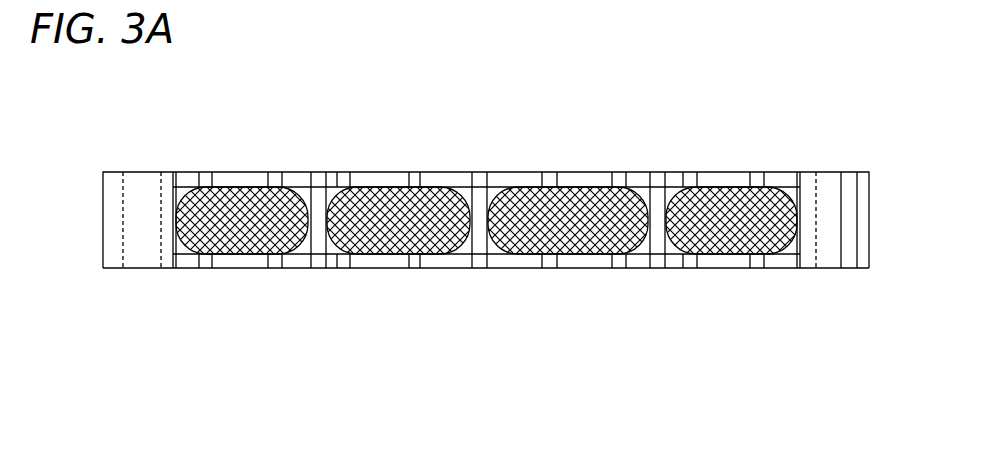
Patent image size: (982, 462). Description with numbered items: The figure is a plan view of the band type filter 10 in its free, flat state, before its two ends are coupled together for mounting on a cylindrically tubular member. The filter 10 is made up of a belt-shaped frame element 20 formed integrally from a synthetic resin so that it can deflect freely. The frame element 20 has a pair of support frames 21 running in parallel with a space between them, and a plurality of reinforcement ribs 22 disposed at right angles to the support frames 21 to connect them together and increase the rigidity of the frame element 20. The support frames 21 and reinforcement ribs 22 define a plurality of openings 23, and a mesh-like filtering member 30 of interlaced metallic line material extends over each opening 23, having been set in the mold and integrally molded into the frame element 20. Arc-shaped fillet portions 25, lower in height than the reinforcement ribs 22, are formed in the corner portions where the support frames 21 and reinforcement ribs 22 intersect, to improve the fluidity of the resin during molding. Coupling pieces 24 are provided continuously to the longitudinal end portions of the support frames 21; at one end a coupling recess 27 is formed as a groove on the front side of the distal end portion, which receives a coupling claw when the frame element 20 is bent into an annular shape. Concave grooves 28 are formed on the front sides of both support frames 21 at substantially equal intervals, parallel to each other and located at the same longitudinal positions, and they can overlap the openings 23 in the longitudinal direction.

The filter 10 is at (658, 158).
The frame element 20 is at (443, 282).
The support frame 21 is at (384, 181).
The reinforcement rib 22 is at (465, 181).
The opening 23 is at (373, 255).
The coupling piece 24 is at (142, 257).
The fillet portion 25 is at (304, 187).
The coupling recess 27 is at (850, 267).
The concave groove 28 is at (480, 178).
The filtering member 30 is at (592, 188).